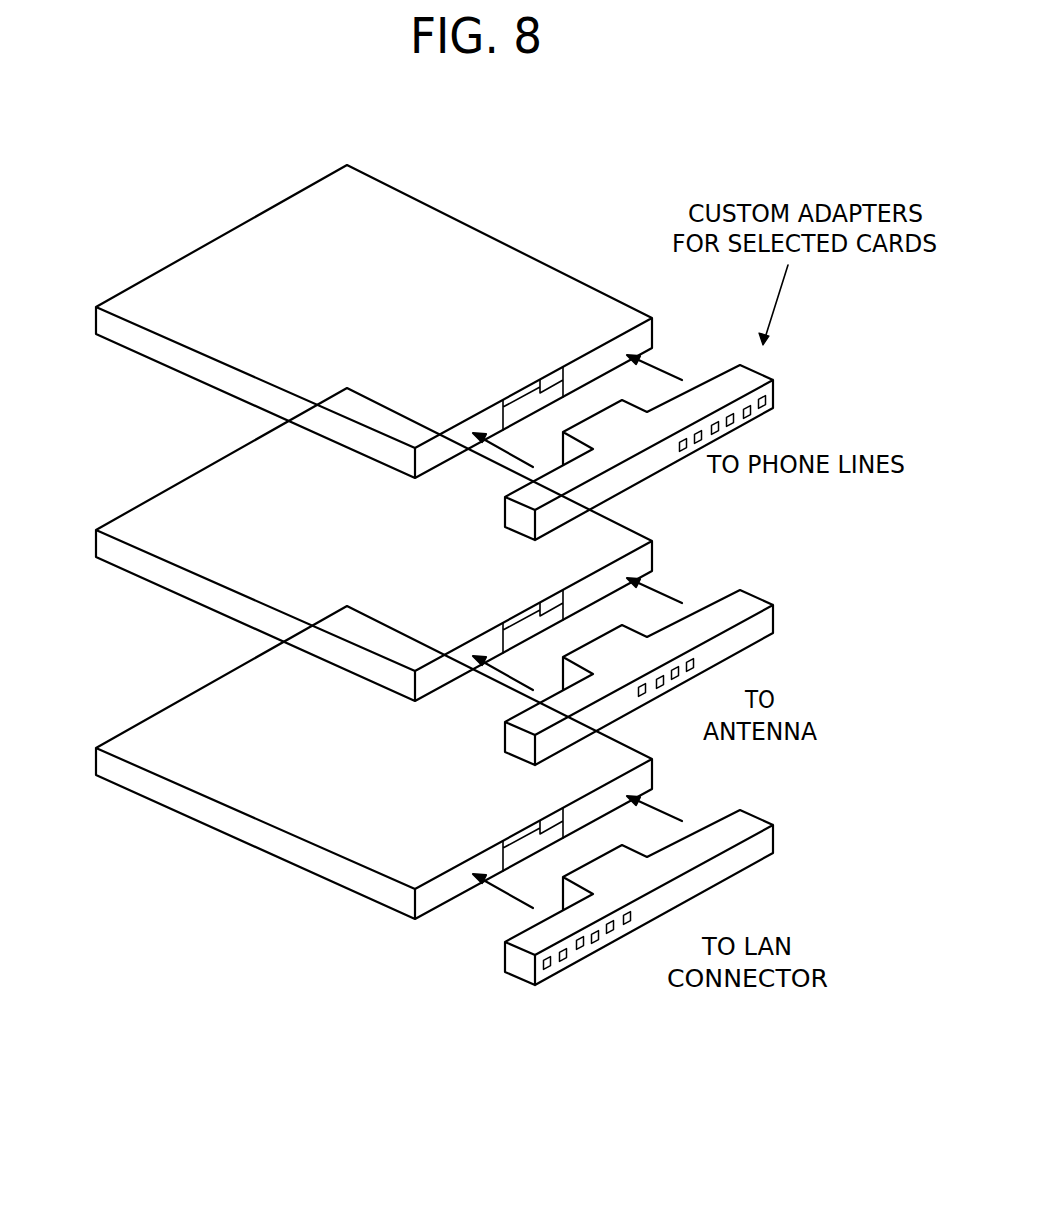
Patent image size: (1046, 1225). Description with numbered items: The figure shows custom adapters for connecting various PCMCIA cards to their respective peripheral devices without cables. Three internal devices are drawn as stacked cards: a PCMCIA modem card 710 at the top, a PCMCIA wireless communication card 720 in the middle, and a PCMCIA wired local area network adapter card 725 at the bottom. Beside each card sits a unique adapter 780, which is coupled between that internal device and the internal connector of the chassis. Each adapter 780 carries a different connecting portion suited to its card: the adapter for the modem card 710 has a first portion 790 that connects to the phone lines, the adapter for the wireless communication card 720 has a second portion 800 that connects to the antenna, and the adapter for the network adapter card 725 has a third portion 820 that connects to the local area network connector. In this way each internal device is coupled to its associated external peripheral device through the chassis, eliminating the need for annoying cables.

The PCMCIA modem card 710 is at (463, 250).
The PCMCIA wireless communication card 720 is at (197, 490).
The PCMCIA wired local area network adapter card 725 is at (327, 827).
The adapter 780 is at (746, 375).
The first portion of the adapter 790 is at (758, 413).
The second portion of the adapter 800 is at (695, 677).
The third portion of the adapter 820 is at (578, 957).